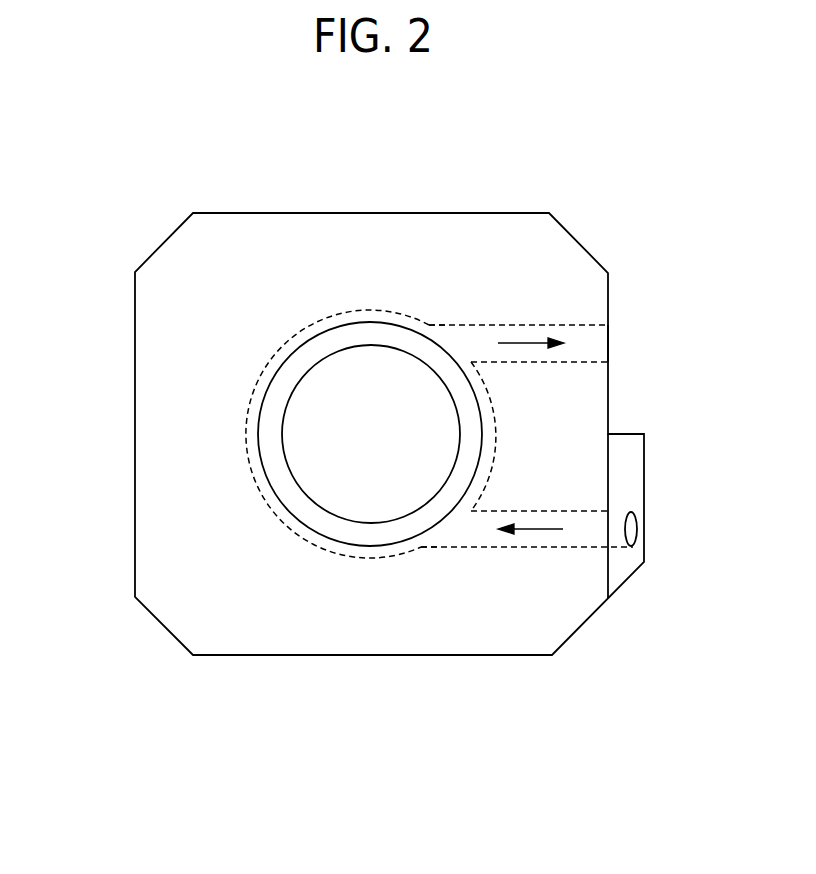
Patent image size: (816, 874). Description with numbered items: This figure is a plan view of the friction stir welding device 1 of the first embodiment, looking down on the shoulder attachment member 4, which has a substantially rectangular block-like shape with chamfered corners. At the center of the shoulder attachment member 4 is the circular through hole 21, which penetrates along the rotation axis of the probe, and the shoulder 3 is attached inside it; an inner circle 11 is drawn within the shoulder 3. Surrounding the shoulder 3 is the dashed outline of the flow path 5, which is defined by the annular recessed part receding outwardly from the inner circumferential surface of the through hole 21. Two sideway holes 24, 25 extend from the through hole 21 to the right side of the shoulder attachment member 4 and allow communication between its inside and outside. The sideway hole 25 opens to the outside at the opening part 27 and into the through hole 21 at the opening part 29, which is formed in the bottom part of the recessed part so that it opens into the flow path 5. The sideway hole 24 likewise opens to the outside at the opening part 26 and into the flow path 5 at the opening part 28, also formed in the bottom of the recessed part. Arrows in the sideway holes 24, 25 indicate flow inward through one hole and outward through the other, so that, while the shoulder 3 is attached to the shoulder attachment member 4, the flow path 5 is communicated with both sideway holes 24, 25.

The friction stir welding device 1 is at (617, 157).
The shoulder 3 is at (310, 512).
The shoulder attachment member 4 is at (143, 560).
The flow path 5 is at (248, 446).
The sensor element 11 is at (365, 487).
The through hole 21 is at (281, 379).
The sideway hole 24 is at (534, 540).
The sideway hole 25 is at (523, 334).
The opening part 26 is at (636, 530).
The opening part 27 is at (608, 343).
The opening part 28 is at (462, 541).
The opening part 29 is at (446, 330).